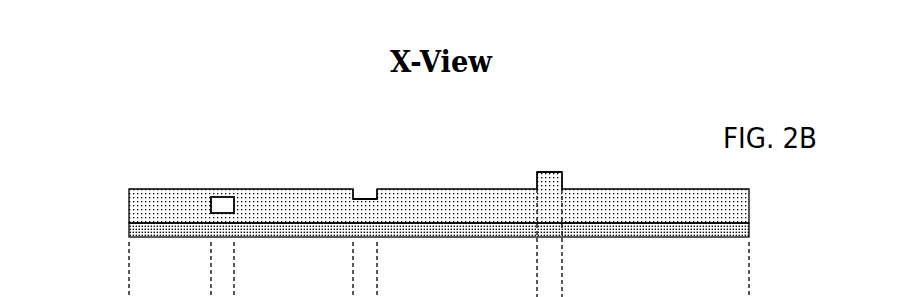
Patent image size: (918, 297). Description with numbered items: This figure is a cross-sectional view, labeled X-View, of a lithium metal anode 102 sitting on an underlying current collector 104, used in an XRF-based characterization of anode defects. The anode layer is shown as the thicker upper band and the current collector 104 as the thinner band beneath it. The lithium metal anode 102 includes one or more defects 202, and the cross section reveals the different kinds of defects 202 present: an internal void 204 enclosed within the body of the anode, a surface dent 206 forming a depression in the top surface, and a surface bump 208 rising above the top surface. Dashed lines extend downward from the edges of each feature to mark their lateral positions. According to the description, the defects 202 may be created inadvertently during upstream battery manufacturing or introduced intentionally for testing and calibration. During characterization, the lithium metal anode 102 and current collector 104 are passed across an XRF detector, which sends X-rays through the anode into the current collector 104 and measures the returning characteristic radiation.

The lithium metal anode 102 is at (129, 194).
The current collector 104 is at (129, 229).
The defects 202 is at (354, 187).
The internal voids 204 is at (213, 197).
The surface dents 206 is at (366, 197).
The surface bumps 208 is at (547, 172).